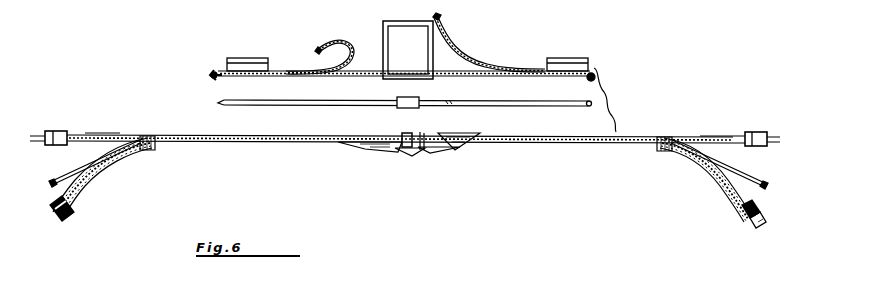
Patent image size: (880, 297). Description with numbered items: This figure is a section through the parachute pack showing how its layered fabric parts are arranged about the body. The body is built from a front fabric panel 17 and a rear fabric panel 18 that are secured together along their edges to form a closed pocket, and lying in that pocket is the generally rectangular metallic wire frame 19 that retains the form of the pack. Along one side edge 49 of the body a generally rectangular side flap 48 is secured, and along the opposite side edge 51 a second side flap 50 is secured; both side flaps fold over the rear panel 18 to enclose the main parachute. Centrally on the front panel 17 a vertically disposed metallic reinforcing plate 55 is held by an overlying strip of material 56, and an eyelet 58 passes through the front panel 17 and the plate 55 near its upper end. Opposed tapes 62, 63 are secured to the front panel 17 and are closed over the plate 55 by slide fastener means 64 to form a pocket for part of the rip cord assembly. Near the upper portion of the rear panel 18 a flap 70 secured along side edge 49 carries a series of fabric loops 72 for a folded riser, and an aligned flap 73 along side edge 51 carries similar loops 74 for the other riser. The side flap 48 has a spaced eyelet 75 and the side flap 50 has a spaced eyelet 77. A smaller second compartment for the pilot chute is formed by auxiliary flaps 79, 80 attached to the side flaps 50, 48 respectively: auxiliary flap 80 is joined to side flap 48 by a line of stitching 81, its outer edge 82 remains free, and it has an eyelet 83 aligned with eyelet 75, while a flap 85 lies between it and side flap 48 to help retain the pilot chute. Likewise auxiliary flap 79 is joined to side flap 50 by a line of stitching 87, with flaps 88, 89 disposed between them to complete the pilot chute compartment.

The front fabric panel 17 is at (223, 139).
The rear fabric panel 18 is at (353, 73).
The wire frame 19 is at (216, 101).
The side flap 48 is at (718, 134).
The side edge 49 is at (593, 70).
The side flap 50 is at (101, 133).
The side edge 51 is at (211, 74).
The reinforcing plate 55 is at (424, 133).
The strip of material 56 is at (450, 133).
The eyelet 58 is at (400, 131).
The tape 62 is at (378, 151).
The tape 63 is at (431, 150).
The slide fastener means 64 is at (410, 155).
The flap 70 is at (499, 63).
The fabric loops 72 is at (570, 59).
The flap 73 is at (308, 67).
The loops 74 is at (250, 55).
The eyelet 75 is at (761, 134).
The eyelet 77 is at (59, 131).
The auxiliary flap 79 is at (100, 174).
The auxiliary flap 80 is at (705, 184).
The line of stitching 81 is at (657, 152).
The outer edge 82 is at (765, 223).
The eyelet 83 is at (763, 210).
The flap 85 is at (746, 169).
The line of stitching 87 is at (155, 146).
The flap 88 is at (68, 171).
The flap 89 is at (52, 218).